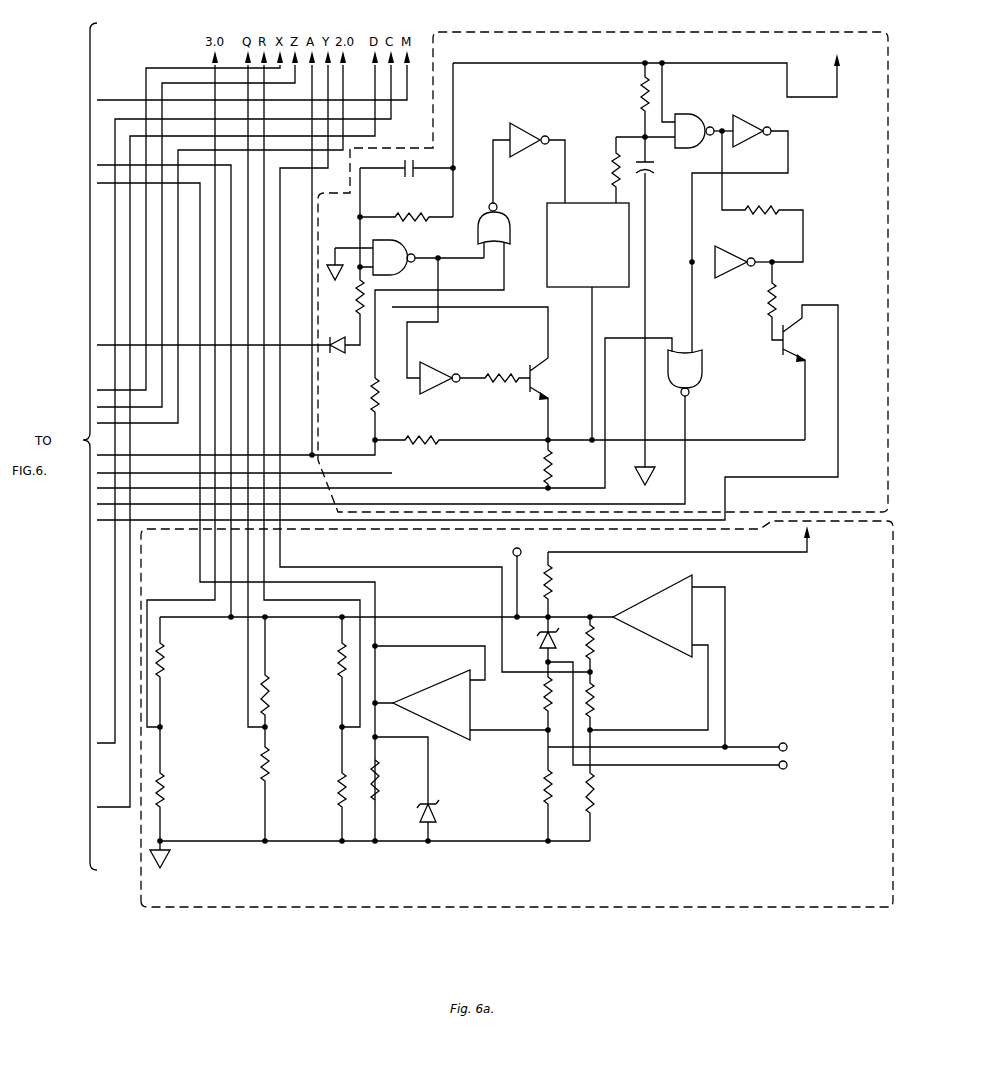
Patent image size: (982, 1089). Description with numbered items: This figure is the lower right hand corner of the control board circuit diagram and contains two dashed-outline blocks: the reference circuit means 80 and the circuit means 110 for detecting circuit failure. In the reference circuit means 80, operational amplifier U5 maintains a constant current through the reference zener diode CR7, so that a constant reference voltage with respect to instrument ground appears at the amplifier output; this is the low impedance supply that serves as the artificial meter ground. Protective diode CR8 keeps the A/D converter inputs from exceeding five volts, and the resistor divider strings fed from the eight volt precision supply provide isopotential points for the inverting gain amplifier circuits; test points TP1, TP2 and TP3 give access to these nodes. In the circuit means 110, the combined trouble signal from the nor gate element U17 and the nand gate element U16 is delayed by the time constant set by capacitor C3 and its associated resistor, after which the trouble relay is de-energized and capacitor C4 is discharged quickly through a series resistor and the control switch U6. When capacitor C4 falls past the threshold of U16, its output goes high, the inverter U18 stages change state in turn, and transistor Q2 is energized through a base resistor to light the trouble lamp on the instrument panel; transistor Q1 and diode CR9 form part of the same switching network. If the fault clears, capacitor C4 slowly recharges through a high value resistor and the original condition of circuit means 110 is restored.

The circuit means for detecting circuit failure 110 is at (888, 135).
The reference circuit means 80 is at (893, 655).
The operational amplifier U5 is at (432, 704).
The control switch U6 is at (588, 248).
The nand gate element U16 is at (695, 129).
The nor gate element U17 is at (444, 259).
The inverter U18 is at (530, 163).
The transistor 2N4401 Q1 is at (487, 373).
The transistor Q2 is at (779, 379).
The capacitor C3 is at (406, 176).
The capacitor C4 is at (662, 175).
The reference zener diode CR7 is at (531, 651).
The protective diode CR8 is at (437, 789).
The diode CR9 is at (334, 353).
The test point 1 TP1 is at (797, 767).
The test point 2 TP2 is at (797, 749).
The test point 3 TP3 is at (512, 575).